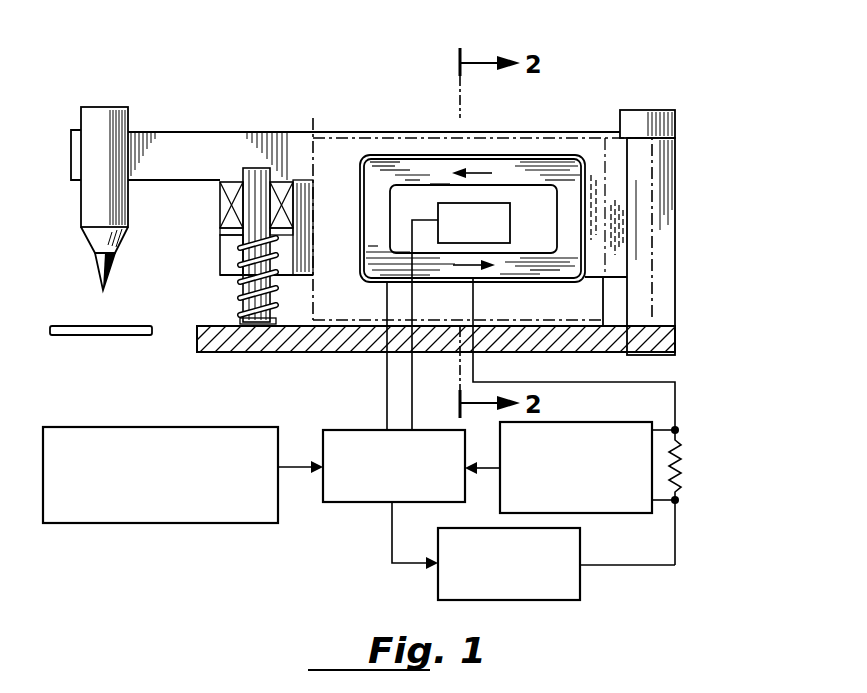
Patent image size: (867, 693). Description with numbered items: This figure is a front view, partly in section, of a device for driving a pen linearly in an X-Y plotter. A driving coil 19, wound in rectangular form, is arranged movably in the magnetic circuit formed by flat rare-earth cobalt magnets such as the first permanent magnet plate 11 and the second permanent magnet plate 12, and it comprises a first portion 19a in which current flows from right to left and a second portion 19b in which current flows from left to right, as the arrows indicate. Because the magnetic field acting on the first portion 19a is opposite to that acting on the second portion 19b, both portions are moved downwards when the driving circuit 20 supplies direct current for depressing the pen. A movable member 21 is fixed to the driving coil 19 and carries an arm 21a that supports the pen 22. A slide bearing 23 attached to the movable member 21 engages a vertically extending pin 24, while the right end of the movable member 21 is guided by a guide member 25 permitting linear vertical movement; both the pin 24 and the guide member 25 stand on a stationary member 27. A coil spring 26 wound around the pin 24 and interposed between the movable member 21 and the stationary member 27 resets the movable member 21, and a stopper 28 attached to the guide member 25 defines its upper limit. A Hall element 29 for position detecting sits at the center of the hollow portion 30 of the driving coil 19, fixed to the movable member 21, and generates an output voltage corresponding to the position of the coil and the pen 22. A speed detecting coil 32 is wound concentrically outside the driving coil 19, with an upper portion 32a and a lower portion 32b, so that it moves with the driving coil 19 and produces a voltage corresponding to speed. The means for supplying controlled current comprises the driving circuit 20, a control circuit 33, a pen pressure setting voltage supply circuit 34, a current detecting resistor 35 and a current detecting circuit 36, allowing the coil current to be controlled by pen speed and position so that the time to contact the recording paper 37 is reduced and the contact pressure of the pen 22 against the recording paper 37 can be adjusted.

The first permanent magnet plate 11 is at (313, 148).
The second permanent magnet plate 12 is at (313, 283).
The driving coil 19 is at (386, 152).
The first portion of driving coil 19a is at (537, 170).
The second portion of driving coil 19b is at (523, 270).
The driving circuit 20 is at (582, 553).
The movable member 21 is at (204, 126).
The arm 21a is at (173, 165).
The pen 22 is at (88, 203).
The slide bearing 23 is at (223, 207).
The shaft or pin 24 is at (243, 280).
The guide member 25 is at (677, 192).
The coil spring 26 is at (243, 318).
The stationary member 27 is at (265, 347).
The stopper 28 is at (642, 112).
The Hall element 29 is at (505, 215).
The hollow portion 30 is at (545, 243).
The speed detecting coil 32 is at (424, 152).
The upper portion of speed detecting coil 32a is at (481, 157).
The lower portion of speed detecting coil 32b is at (443, 278).
The control circuit 33 is at (370, 497).
The pen pressure setting voltage supply circuit 34 is at (216, 518).
The current detecting resistor 35 is at (681, 468).
The current detecting circuit 36 is at (600, 422).
The recording paper 37 is at (122, 335).